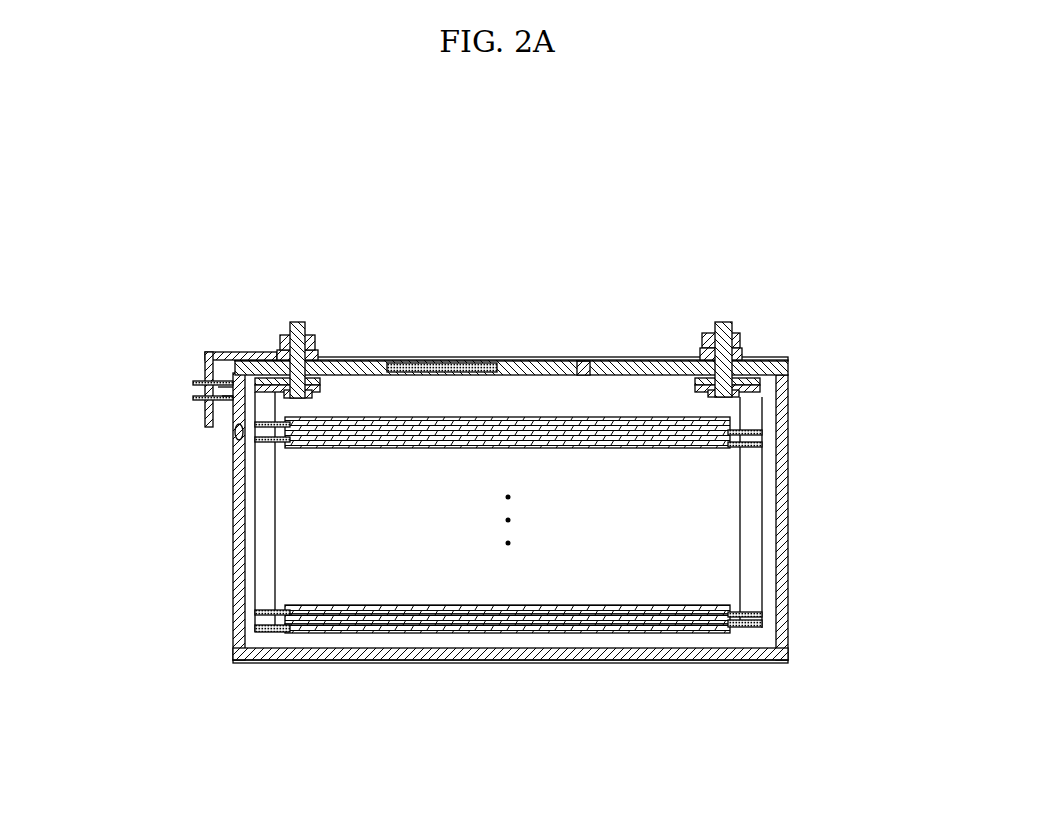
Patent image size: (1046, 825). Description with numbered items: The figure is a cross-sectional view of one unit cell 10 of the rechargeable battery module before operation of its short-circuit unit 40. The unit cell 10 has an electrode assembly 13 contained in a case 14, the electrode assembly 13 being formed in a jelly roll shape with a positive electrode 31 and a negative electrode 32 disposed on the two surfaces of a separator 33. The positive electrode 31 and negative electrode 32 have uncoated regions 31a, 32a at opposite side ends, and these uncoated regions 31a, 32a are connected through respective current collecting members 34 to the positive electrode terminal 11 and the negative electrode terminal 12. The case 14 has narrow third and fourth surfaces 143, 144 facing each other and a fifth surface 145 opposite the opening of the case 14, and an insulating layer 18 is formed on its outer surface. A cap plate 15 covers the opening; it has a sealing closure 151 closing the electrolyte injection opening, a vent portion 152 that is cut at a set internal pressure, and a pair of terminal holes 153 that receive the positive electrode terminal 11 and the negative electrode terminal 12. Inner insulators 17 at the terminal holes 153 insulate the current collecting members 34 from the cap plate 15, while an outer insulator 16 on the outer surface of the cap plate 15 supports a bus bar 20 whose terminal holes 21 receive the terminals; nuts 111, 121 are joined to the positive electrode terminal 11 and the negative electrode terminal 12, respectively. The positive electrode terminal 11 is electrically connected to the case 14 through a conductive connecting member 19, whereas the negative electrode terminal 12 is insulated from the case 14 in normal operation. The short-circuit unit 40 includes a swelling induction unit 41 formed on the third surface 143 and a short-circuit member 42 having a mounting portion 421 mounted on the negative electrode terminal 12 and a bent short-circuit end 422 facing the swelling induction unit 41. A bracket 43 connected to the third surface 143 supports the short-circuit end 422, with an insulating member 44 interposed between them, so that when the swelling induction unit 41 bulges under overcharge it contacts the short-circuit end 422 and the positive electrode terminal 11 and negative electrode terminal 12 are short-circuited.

The unit cell 10 is at (843, 286).
The positive electrode terminal 11 is at (721, 320).
The nut 111 is at (733, 337).
The negative electrode terminal 12 is at (293, 320).
The nut 121 is at (308, 334).
The electrode assembly 13 is at (649, 637).
The case 14 is at (234, 644).
The third surface 143 is at (233, 593).
The fourth surface 144 is at (780, 520).
The fifth surface 145 is at (756, 663).
The cap plate 15 is at (540, 360).
The sealing closure 151 is at (584, 360).
The vent portion 152 is at (485, 360).
The terminal hole 153 is at (322, 378).
The outer insulator 16 is at (263, 352).
The inner insulator 17 is at (373, 358).
The insulating layer 18 is at (790, 657).
The connecting member 19 is at (741, 348).
The bus bar 20 is at (318, 347).
The terminal hole 21 is at (280, 349).
The positive electrode 31 is at (340, 632).
The uncoated region 31a is at (267, 636).
The negative electrode 32 is at (543, 622).
The uncoated region 32a is at (742, 626).
The separator 33 is at (420, 618).
The current collecting member 34 is at (236, 352).
The short-circuit unit 40 is at (82, 385).
The swelling induction unit 41 is at (236, 444).
The short-circuit member 42 is at (118, 372).
The mounting portion 421 is at (230, 353).
The short-circuit end 422 is at (200, 415).
The bracket 43 is at (222, 390).
The insulating member 44 is at (226, 398).